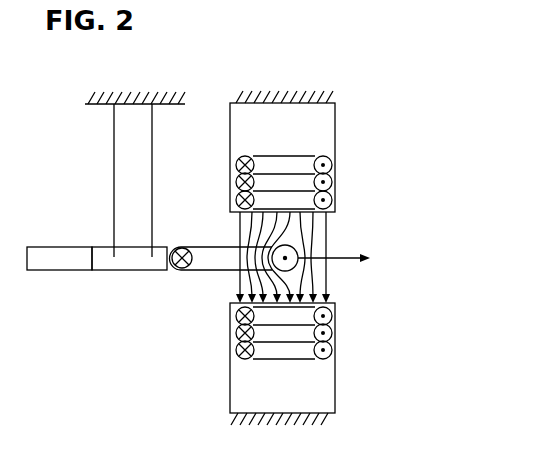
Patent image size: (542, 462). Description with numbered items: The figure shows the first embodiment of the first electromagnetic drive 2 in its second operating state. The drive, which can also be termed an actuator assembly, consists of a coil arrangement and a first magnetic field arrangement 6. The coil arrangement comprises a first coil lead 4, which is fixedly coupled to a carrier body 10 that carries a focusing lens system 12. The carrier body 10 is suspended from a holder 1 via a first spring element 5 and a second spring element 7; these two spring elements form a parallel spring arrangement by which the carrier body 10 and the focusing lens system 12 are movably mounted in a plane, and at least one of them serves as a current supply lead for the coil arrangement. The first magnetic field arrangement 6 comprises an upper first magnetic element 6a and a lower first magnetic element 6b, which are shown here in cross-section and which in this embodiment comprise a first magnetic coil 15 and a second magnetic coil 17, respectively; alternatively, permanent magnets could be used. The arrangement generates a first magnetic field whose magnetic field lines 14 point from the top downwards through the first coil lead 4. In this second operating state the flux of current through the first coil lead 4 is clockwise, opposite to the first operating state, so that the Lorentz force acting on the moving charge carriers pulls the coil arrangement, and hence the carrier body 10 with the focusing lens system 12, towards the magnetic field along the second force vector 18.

The first electromagnetic drive 2 is at (215, 78).
The holder 1 is at (97, 104).
The first spring element 5 is at (113, 155).
The second spring element 7 is at (152, 132).
The focusing lens system 12 is at (50, 271).
The carrier body 10 is at (122, 272).
The first coil lead 4 is at (208, 271).
The magnetic field lines 14 is at (330, 270).
The second force vector 18 is at (338, 253).
The first magnetic field arrangement 6 is at (210, 330).
The upper first magnetic element 6a is at (316, 151).
The lower first magnetic element 6b is at (316, 364).
The first magnetic coil 15 is at (281, 155).
The second magnetic coil 17 is at (286, 360).